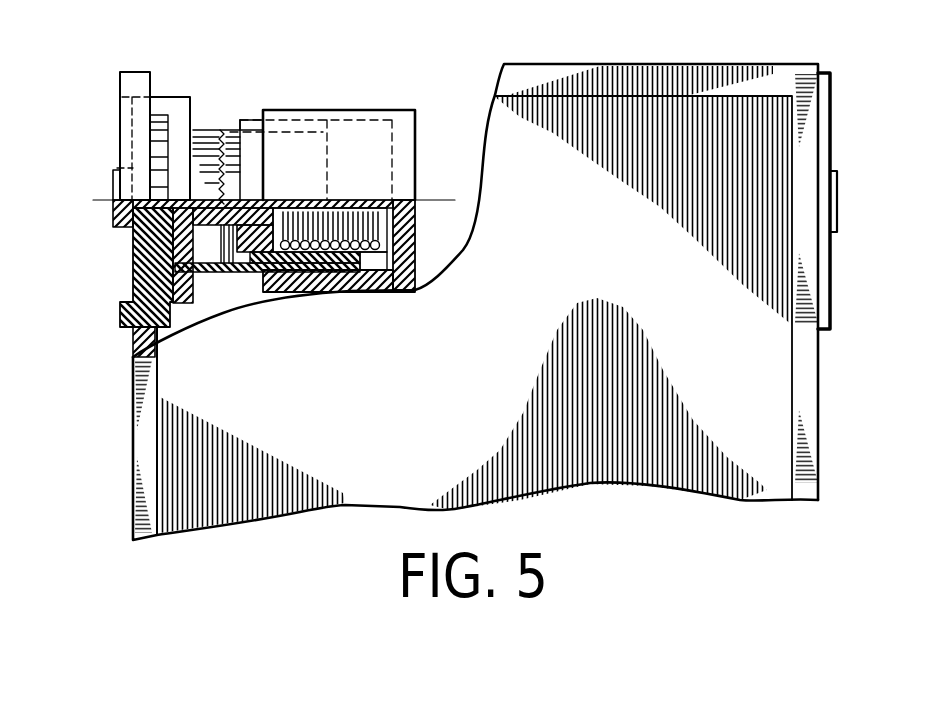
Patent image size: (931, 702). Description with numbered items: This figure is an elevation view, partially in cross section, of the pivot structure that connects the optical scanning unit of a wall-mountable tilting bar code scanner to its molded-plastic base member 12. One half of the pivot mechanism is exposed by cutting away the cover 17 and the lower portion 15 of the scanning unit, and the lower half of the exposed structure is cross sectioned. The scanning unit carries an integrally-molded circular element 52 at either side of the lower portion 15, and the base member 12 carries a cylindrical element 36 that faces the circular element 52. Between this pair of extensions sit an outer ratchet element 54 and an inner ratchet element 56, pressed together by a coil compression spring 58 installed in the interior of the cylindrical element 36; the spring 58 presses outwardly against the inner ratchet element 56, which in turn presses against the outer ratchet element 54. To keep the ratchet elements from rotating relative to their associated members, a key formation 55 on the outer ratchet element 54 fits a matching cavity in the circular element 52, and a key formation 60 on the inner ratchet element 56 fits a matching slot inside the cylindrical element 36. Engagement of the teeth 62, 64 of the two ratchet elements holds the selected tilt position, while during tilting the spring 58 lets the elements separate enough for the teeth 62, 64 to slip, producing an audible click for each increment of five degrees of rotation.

The base member 12 is at (400, 278).
The lower portion 15 is at (133, 343).
The cover 17 is at (768, 345).
The cylindrical element 36 is at (353, 110).
The circular element 52 is at (143, 152).
The outer ratchet element 54 is at (135, 243).
The key formation 55 is at (162, 103).
The inner ratchet element 56 is at (237, 140).
The spring 58 is at (360, 250).
The key formation 60 is at (253, 117).
The teeth 62 is at (233, 268).
The teeth 64 is at (222, 268).